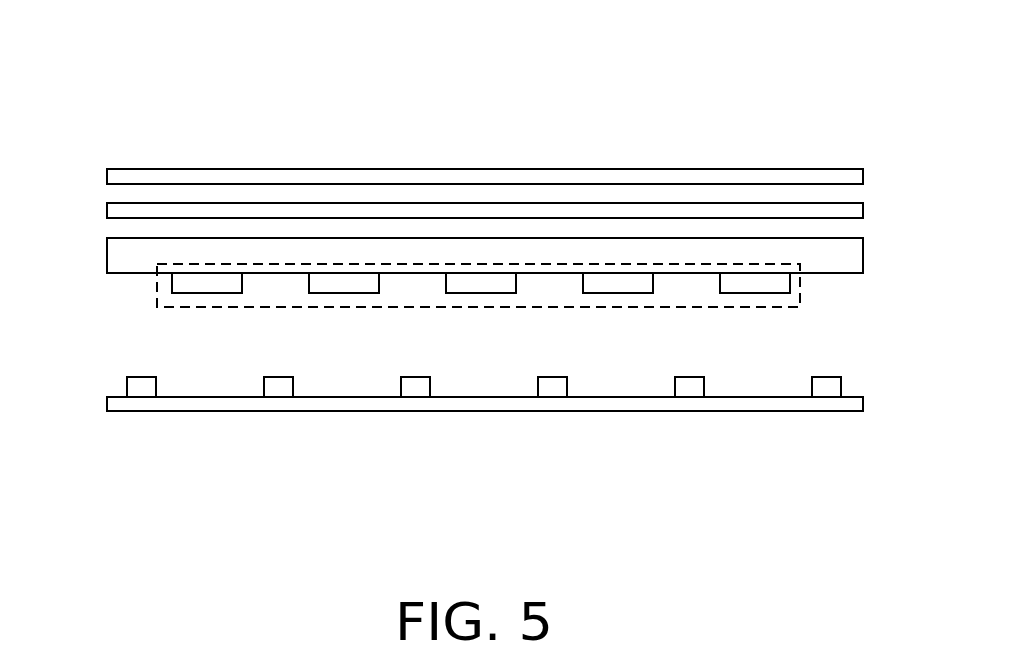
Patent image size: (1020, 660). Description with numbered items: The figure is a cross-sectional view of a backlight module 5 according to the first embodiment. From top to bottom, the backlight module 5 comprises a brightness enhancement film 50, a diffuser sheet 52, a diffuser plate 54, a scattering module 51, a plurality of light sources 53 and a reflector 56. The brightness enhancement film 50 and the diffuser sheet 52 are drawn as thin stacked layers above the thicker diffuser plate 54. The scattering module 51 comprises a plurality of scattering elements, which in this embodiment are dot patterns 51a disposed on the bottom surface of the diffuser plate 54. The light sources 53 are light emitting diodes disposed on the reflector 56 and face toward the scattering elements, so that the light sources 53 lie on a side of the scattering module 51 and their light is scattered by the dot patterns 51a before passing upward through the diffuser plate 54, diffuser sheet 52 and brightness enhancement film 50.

The backlight module 5 is at (760, 92).
The brightness enhancement film 50 is at (107, 177).
The diffuser sheet 52 is at (863, 212).
The diffuser plate 54 is at (107, 259).
The scattering module 51 is at (484, 308).
The dot patterns 51a is at (762, 293).
The light sources 53 is at (475, 427).
The reflector 56 is at (107, 403).